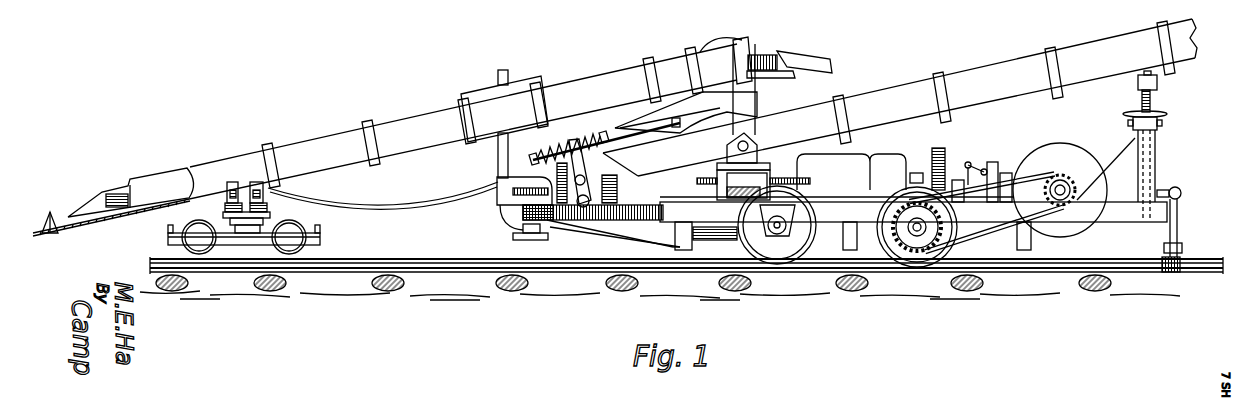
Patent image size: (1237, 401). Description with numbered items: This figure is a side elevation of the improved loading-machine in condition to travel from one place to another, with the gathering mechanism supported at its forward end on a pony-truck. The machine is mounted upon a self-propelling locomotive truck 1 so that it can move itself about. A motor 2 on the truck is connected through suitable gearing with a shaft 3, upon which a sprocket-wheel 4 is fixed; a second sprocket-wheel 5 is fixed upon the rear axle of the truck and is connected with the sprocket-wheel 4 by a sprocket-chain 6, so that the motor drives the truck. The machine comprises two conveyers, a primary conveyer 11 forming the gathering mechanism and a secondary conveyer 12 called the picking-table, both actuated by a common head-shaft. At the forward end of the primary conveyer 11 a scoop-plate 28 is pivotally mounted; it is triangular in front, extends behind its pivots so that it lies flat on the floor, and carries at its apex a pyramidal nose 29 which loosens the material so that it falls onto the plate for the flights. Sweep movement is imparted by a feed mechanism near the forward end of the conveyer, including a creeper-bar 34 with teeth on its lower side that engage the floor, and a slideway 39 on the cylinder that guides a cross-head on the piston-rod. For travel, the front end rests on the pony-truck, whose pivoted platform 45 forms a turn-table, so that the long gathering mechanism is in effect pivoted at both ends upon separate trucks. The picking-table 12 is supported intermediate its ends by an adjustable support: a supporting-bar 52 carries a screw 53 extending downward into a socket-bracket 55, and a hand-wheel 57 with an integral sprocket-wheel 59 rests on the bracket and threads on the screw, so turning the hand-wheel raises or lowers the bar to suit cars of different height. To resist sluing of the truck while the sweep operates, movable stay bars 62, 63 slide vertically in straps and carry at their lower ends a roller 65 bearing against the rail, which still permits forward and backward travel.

The locomotive truck 1 is at (913, 223).
The motor 2 is at (904, 175).
The shaft 3 is at (1047, 172).
The sprocket-wheel 4 is at (1045, 175).
The sprocket-wheel 5 is at (905, 238).
The sprocket-chain 6 is at (1020, 225).
The primary conveyer 11 is at (577, 92).
The secondary conveyer 12 is at (900, 97).
The scoop-plate 28 is at (84, 213).
The nose 29 is at (51, 212).
The creeper-bar 34 is at (269, 208).
The slideway 39 is at (258, 189).
The platform 45 is at (225, 212).
The supporting-bar 52 is at (1158, 82).
The screw 53 is at (1152, 100).
The socket-bracket 55 is at (1156, 166).
The hand-wheel 57 is at (1168, 114).
The sprocket-wheel 59 is at (1160, 124).
The bar 62 is at (1169, 229).
The bar 63 is at (1182, 260).
The roller 65 is at (1180, 209).